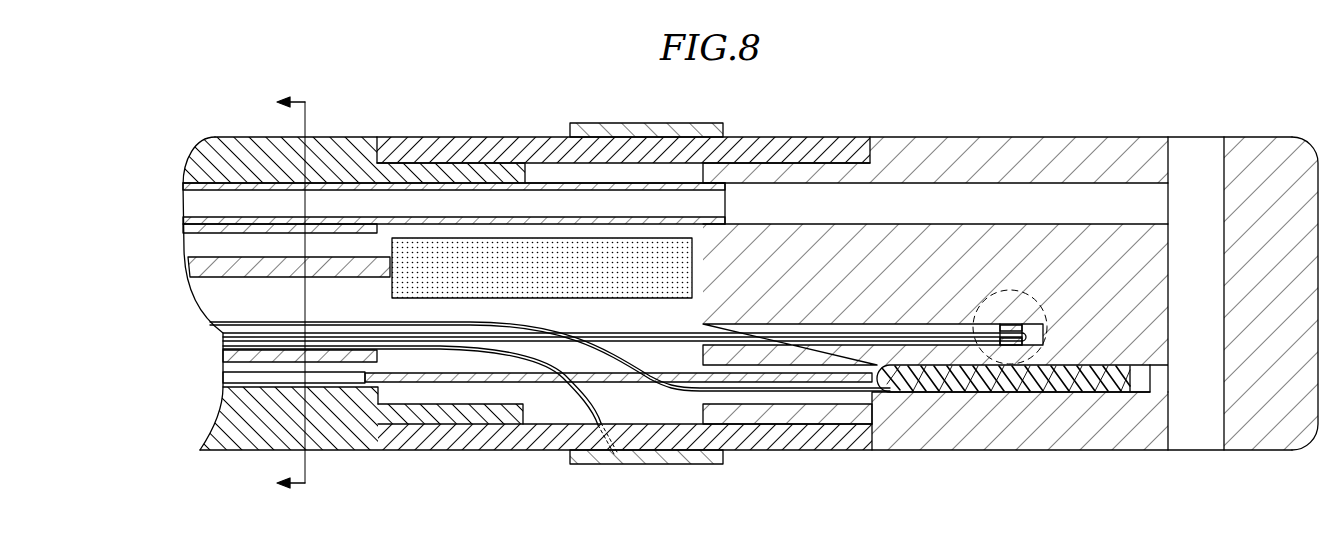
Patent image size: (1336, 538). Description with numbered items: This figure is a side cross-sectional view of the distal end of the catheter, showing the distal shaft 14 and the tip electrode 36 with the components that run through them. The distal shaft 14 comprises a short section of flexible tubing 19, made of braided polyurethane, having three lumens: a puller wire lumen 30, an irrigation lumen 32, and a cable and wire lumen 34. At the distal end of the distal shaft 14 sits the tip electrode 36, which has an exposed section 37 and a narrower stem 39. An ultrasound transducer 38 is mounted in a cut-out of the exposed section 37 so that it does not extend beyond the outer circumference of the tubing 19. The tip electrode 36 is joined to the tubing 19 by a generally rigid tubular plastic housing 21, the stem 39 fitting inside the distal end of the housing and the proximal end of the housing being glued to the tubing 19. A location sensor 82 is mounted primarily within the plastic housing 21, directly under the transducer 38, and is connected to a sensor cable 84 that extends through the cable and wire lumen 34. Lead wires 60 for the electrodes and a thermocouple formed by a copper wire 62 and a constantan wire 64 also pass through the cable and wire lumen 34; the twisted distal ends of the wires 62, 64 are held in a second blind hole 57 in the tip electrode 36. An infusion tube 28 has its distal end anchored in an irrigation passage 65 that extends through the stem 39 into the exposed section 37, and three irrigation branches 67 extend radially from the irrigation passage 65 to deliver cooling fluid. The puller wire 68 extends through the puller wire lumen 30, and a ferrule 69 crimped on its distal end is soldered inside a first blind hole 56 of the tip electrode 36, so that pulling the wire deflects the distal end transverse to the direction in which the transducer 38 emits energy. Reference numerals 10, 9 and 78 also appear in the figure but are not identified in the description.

The distal shaft 14 is at (350, 100).
The section line 10 is at (274, 297).
The flexible tubing 19 is at (203, 160).
The tubular plastic housing 21 is at (435, 145).
The ultrasound transducer 38 is at (660, 125).
The infusion tube 28 is at (687, 184).
The stem 39 is at (800, 173).
The irrigation branches 67 is at (1195, 150).
The exposed section 37 is at (1262, 152).
The tip electrode 36 is at (1290, 158).
The irrigation passage 65 is at (865, 203).
The ferrule 69 is at (980, 395).
The lower body portion 9 is at (1085, 372).
The first blind hole 56 is at (1139, 382).
The second blind hole 57 is at (1025, 290).
The location sensor 82 is at (533, 257).
The irrigation lumen 32 is at (203, 248).
The sensor cable 84 is at (207, 280).
The cable and wire lumen 34 is at (238, 330).
The copper wire 62 is at (727, 338).
The constantan wire 64 is at (790, 338).
The puller wire lumen 30 is at (237, 363).
The guide strip 78 is at (237, 377).
The puller wire 68 is at (635, 380).
The lead wire 60 is at (518, 450).